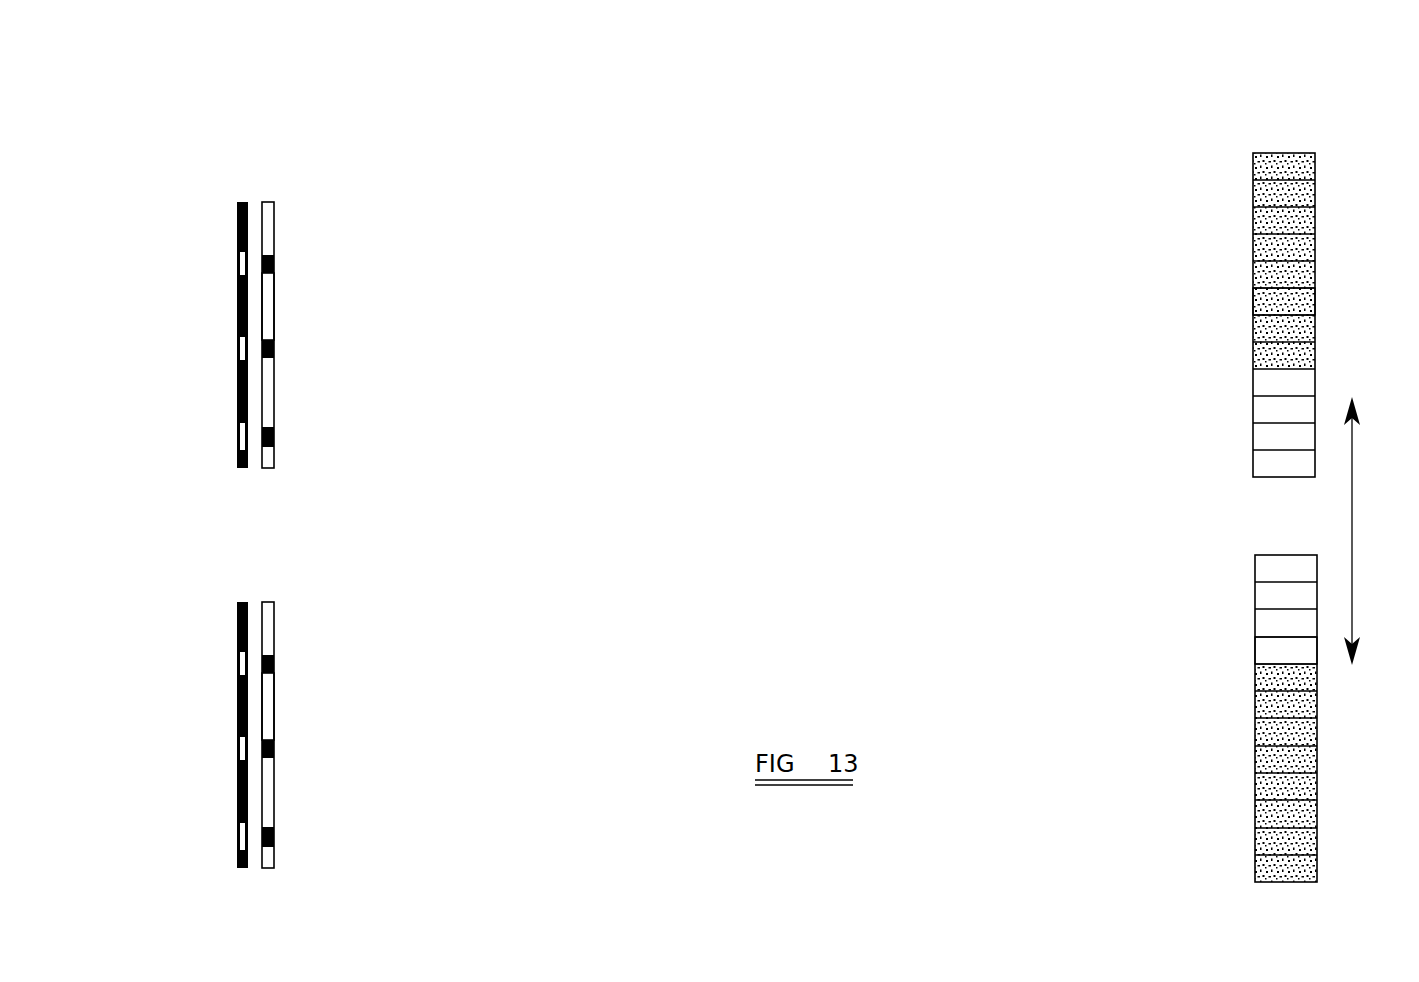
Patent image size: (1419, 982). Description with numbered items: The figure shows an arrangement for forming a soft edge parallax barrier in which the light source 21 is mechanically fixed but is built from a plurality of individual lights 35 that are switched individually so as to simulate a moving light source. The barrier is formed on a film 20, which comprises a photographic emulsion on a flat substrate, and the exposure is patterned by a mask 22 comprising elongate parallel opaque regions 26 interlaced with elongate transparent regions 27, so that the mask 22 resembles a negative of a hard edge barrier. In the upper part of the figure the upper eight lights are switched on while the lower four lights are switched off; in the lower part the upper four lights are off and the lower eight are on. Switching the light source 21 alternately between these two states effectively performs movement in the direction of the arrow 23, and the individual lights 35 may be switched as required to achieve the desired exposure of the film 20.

The film 20 is at (240, 202).
The mask 22 is at (267, 201).
The opaque regions 26 is at (274, 267).
The transparent regions 27 is at (274, 310).
The light source 21 is at (1280, 847).
The individual lights 35 is at (1308, 302).
The arrow 23 is at (1352, 478).